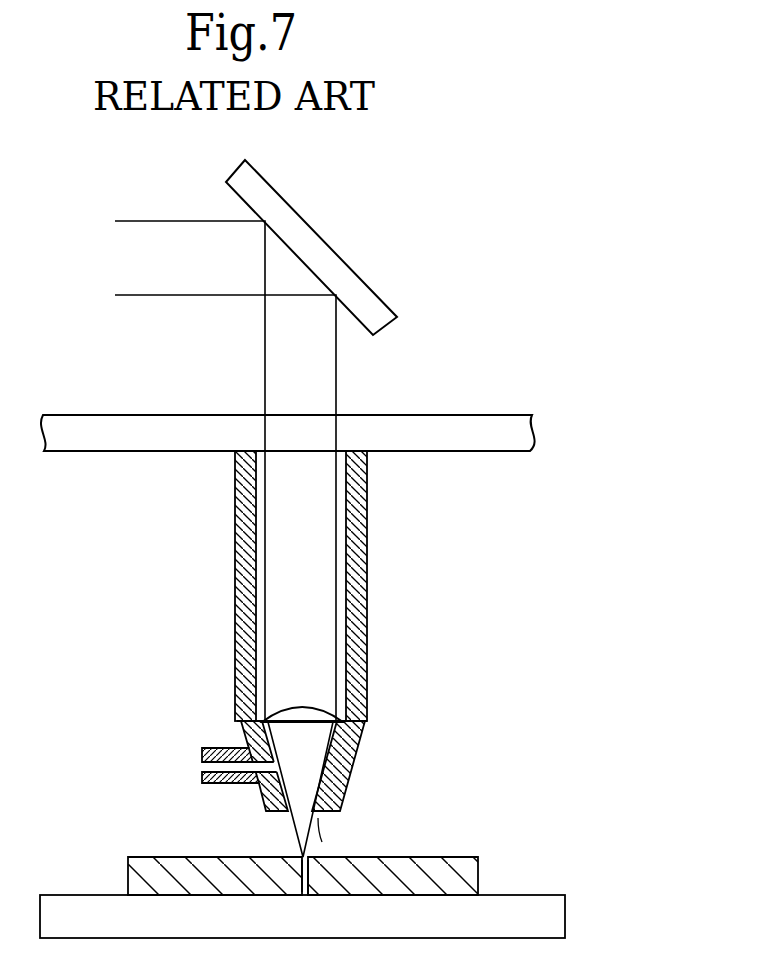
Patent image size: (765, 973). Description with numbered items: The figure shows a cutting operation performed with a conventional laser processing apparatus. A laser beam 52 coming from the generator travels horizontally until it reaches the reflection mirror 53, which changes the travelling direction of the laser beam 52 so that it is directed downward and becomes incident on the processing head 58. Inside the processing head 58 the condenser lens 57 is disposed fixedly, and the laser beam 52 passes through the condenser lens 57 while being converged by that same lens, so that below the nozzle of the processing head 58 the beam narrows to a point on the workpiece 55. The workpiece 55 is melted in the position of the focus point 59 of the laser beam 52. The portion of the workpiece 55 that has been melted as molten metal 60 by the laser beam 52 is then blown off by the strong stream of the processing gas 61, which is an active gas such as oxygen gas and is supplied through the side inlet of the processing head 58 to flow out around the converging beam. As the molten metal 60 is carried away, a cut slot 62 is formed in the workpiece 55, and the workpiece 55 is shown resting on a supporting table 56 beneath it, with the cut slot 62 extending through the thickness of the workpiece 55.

The laser beam 52 is at (266, 377).
The reflection mirror 53 is at (322, 258).
The workpiece 55 is at (460, 880).
The table 56 is at (577, 907).
The condenser lens 57 is at (283, 713).
The processing head 58 is at (362, 658).
The focus point 59 is at (301, 858).
The molten metal 60 is at (300, 878).
The processing gas 61 is at (322, 842).
The cut slot 62 is at (306, 884).